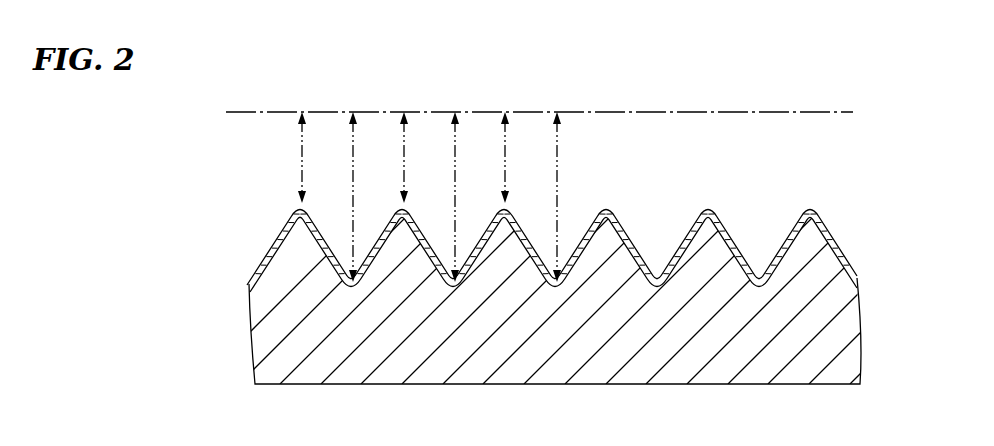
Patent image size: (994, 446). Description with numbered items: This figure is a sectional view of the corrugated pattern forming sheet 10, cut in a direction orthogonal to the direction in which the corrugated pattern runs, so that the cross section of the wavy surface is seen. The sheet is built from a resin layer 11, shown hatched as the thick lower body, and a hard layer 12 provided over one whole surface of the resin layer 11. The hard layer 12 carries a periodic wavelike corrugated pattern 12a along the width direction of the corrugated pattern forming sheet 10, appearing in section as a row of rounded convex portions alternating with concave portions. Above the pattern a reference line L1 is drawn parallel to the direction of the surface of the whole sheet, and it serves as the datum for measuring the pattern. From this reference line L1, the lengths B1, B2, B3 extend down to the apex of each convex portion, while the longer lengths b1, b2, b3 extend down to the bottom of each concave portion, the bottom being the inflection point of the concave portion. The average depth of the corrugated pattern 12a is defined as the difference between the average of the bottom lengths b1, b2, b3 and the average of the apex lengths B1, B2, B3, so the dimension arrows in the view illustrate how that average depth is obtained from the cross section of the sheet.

The corrugated pattern forming sheet 10 is at (246, 228).
The resin layer 11 is at (758, 373).
The hard layer 12 is at (838, 240).
The corrugated pattern 12a is at (722, 198).
The reference line L1 is at (613, 111).
The length from reference line to apex of first convex portion B1 is at (285, 157).
The length from reference line to bottom of first concave portion b1 is at (338, 197).
The length from reference line to apex of second convex portion B2 is at (387, 157).
The length from reference line to bottom of second concave portion b2 is at (440, 197).
The length from reference line to apex of third convex portion B3 is at (489, 157).
The length from reference line to bottom of third concave portion b3 is at (542, 197).